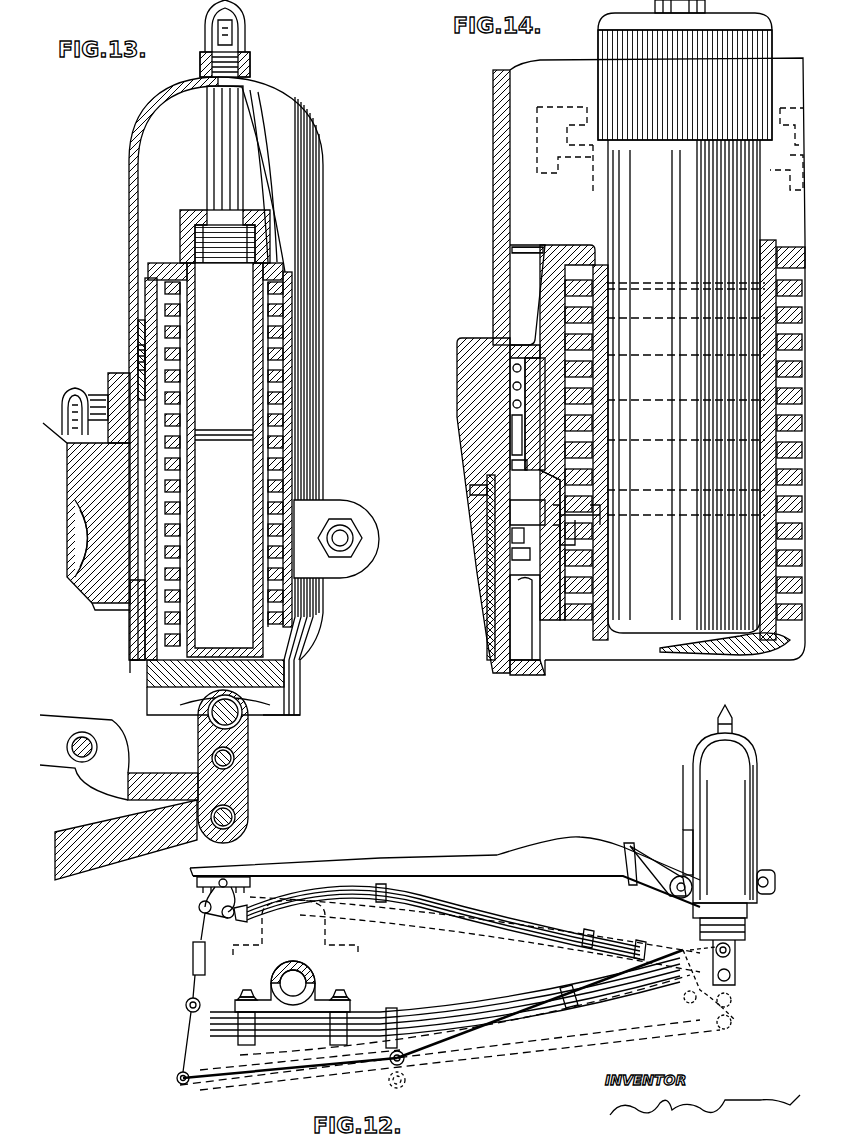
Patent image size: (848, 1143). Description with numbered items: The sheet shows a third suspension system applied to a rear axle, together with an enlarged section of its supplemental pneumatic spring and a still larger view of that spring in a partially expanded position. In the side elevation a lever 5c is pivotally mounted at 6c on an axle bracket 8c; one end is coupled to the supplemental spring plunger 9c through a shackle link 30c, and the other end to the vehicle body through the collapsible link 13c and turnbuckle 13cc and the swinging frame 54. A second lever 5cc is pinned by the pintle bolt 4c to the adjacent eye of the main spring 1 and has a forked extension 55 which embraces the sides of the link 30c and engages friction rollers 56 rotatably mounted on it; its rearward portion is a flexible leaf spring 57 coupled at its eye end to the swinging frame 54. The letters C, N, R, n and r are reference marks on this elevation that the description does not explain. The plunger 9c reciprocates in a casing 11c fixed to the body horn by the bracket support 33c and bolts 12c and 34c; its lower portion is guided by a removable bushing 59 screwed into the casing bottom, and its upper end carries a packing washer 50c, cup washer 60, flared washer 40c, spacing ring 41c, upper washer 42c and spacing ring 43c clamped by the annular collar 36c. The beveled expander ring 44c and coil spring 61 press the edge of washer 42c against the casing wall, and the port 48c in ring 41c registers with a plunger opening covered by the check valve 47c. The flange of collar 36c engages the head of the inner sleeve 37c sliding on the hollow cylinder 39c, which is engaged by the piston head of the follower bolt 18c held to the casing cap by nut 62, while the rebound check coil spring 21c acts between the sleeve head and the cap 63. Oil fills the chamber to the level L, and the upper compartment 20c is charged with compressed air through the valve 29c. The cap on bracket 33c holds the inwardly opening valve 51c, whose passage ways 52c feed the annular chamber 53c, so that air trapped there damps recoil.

In FIG. 12, the main spring 1 is at (528, 1035).
In FIG. 12, the pintle bolt 4c is at (680, 975).
In FIG. 13, the lever 5c is at (115, 860).
In FIG. 12, the lever 5c is at (460, 1045).
In FIG. 12, the second lever 5cc is at (640, 990).
In FIG. 12, the pivot 6c is at (400, 1062).
In FIG. 12, the axle bracket 8c is at (393, 1022).
In FIG. 13, the supplemental spring plunger 9c is at (290, 698).
In FIG. 14, the supplemental spring plunger 9c is at (525, 595).
In FIG. 12, the supplemental spring plunger 9c is at (747, 930).
In FIG. 13, the casing 11c is at (305, 148).
In FIG. 14, the casing 11c is at (490, 105).
In FIG. 12, the casing 11c is at (752, 835).
In FIG. 12, the bolt 12c is at (648, 850).
In FIG. 12, the collapsible link 13c is at (185, 1050).
In FIG. 12, the turnbuckle 13cc is at (190, 968).
In FIG. 13, the follower bolt 18c is at (215, 117).
In FIG. 14, the follower bolt 18c is at (712, 10).
In FIG. 13, the upper compartment 20c is at (165, 152).
In FIG. 14, the upper compartment 20c is at (525, 137).
In FIG. 13, the coil spring 21c is at (280, 320).
In FIG. 14, the coil spring 21c is at (505, 668).
In FIG. 13, the valve 29c is at (233, 33).
In FIG. 13, the shackle link 30c is at (235, 797).
In FIG. 12, the shackle link 30c is at (738, 960).
In FIG. 13, the bracket support 33c is at (112, 606).
In FIG. 12, the bracket support 33c is at (668, 835).
In FIG. 13, the bolt 34c is at (92, 602).
In FIG. 12, the bolt 34c is at (683, 775).
In FIG. 13, the annular collar 36c is at (150, 265).
In FIG. 14, the annular collar 36c is at (540, 312).
In FIG. 13, the inner plunger sleeve 37c is at (180, 310).
In FIG. 14, the inner plunger sleeve 37c is at (550, 270).
In FIG. 13, the hollow cylinder 39c is at (185, 235).
In FIG. 14, the hollow cylinder 39c is at (610, 210).
In FIG. 14, the flared washer 40c is at (512, 535).
In FIG. 14, the spacing ring 41c is at (520, 470).
In FIG. 13, the upper washer 42c is at (137, 368).
In FIG. 14, the upper washer 42c is at (512, 440).
In FIG. 14, the spacing ring 43c is at (520, 375).
In FIG. 14, the beveled expander ring 44c is at (522, 410).
In FIG. 13, the check valve 47c is at (160, 397).
In FIG. 14, the check valve 47c is at (590, 520).
In FIG. 14, the port 48c is at (535, 515).
In FIG. 14, the packing washer 50c is at (535, 580).
In FIG. 13, the inwardly opening valve 51c is at (70, 398).
In FIG. 13, the passage ways 52c is at (105, 372).
In FIG. 14, the passage ways 52c is at (482, 487).
In FIG. 13, the annular chamber 53c is at (140, 538).
In FIG. 14, the annular chamber 53c is at (520, 668).
In FIG. 12, the swinging frame 54 is at (199, 908).
In FIG. 13, the forked extension 55 is at (160, 770).
In FIG. 12, the forked extension 55 is at (710, 1000).
In FIG. 13, the friction rollers 56 is at (235, 757).
In FIG. 12, the friction rollers 56 is at (733, 980).
In FIG. 12, the flexible leaf spring 57 is at (505, 915).
In FIG. 13, the removable bushing 59 is at (140, 654).
In FIG. 14, the cup washer 60 is at (512, 555).
In FIG. 13, the coil spring 61 is at (137, 335).
In FIG. 14, the coil spring 61 is at (470, 345).
In FIG. 13, the nut 62 is at (245, 66).
In FIG. 12, the nut 62 is at (735, 720).
In FIG. 13, the cap 63 is at (265, 665).
In FIG. 12, the section line C is at (690, 955).
In FIG. 12, the section line N is at (215, 1014).
In FIG. 12, the section line R is at (215, 1035).
In FIG. 12, the pivot axis n is at (388, 1058).
In FIG. 12, the pivot axis r is at (176, 1079).
In FIG. 13, the oil level L is at (265, 265).
In FIG. 14, the oil level L is at (480, 515).